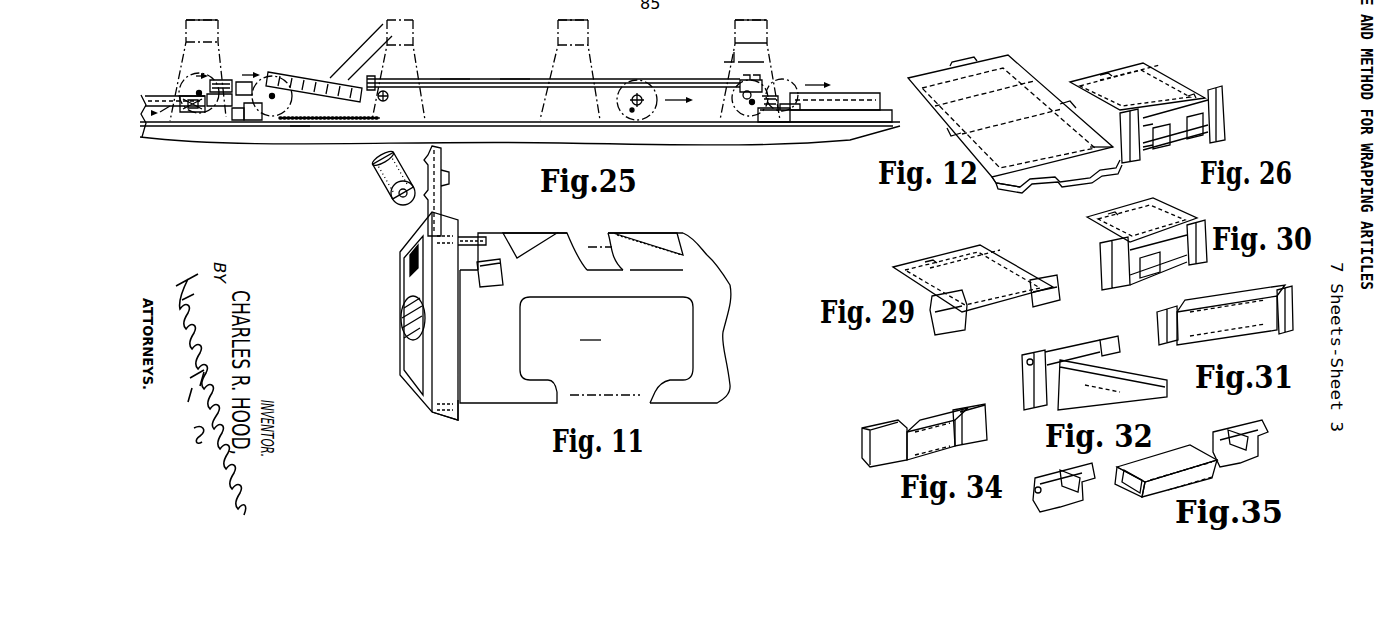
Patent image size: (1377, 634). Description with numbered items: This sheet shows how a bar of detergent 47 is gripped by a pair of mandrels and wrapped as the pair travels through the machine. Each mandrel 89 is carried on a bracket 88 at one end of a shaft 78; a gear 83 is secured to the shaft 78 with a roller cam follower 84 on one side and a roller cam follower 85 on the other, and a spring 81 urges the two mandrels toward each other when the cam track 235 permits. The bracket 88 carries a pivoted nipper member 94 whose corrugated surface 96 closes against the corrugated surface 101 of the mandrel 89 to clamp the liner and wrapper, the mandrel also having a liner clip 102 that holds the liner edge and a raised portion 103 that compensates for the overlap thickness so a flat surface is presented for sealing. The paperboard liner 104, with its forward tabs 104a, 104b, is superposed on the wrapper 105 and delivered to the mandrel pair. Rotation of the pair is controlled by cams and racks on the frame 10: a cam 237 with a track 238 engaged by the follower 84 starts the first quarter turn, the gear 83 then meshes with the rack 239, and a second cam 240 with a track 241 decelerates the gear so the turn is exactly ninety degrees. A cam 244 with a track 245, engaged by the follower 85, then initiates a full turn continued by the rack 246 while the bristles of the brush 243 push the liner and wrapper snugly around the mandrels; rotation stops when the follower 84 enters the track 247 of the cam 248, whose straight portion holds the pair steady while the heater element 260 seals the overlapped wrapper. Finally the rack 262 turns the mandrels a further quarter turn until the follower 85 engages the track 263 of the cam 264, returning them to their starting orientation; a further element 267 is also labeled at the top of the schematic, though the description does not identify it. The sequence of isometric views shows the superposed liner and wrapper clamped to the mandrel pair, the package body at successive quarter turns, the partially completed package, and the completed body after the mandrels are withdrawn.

In FIG. 25, the frame 10 is at (306, 130).
In FIG. 11, the bar of detergent 47 is at (595, 318).
In FIG. 11, the shaft 78 is at (403, 322).
In FIG. 25, the spring 81 is at (574, 10).
In FIG. 25, the gear 83 is at (188, 95).
In FIG. 25, the roller cam follower 84 is at (178, 110).
In FIG. 25, the roller cam follower 85 is at (632, 112).
In FIG. 11, the bracket 88 is at (446, 418).
In FIG. 26, the bracket 88 is at (1226, 105).
In FIG. 29, the bracket 88 is at (940, 328).
In FIG. 30, the bracket 88 is at (1207, 225).
In FIG. 31, the bracket 88 is at (1265, 293).
In FIG. 32, the bracket 88 is at (1033, 352).
In FIG. 34, the bracket 88 is at (987, 432).
In FIG. 35, the bracket 88 is at (1040, 505).
In FIG. 11, the mandrel 89 is at (575, 233).
In FIG. 26, the mandrel 89 is at (1210, 128).
In FIG. 34, the mandrel 89 is at (965, 410).
In FIG. 35, the mandrel 89 is at (1085, 500).
In FIG. 11, the nipper member 94 is at (441, 152).
In FIG. 26, the nipper member 94 is at (1212, 90).
In FIG. 30, the nipper member 94 is at (1195, 262).
In FIG. 32, the nipper member 94 is at (1022, 362).
In FIG. 11, the corrugated surface 96 is at (449, 178).
In FIG. 11, the corrugated surface 101 is at (468, 236).
In FIG. 11, the liner clip 102 is at (488, 288).
In FIG. 11, the raised portion 103 is at (510, 233).
In FIG. 12, the liner 104 is at (1030, 186).
In FIG. 26, the liner 104 is at (1103, 77).
In FIG. 29, the liner 104 is at (932, 262).
In FIG. 30, the liner 104 is at (1113, 215).
In FIG. 12, the forward tab 104a is at (998, 186).
In FIG. 12, the forward tab 104b is at (1093, 147).
In FIG. 12, the wrapper 105 is at (1020, 54).
In FIG. 26, the wrapper 105 is at (1150, 67).
In FIG. 29, the wrapper 105 is at (990, 253).
In FIG. 30, the wrapper 105 is at (1165, 206).
In FIG. 34, the wrapper 105 is at (915, 420).
In FIG. 25, the cam track 235 is at (275, 10).
In FIG. 25, the cam 237 is at (192, 118).
In FIG. 25, the track 238 is at (182, 110).
In FIG. 25, the rack 239 is at (216, 120).
In FIG. 25, the second cam 240 is at (222, 94).
In FIG. 25, the track 241 is at (236, 100).
In FIG. 25, the brush 243 is at (300, 78).
In FIG. 25, the cam 244 is at (254, 120).
In FIG. 25, the track 245 is at (240, 120).
In FIG. 25, the rack 246 is at (307, 133).
In FIG. 25, the track 247 is at (455, 80).
In FIG. 25, the cam 248 is at (512, 80).
In FIG. 32, the heater element 260 is at (1152, 372).
In FIG. 25, the rack 262 is at (770, 82).
In FIG. 25, the track 263 is at (747, 112).
In FIG. 25, the cam 264 is at (800, 108).
In FIG. 25, the hopper 267 is at (844, 10).